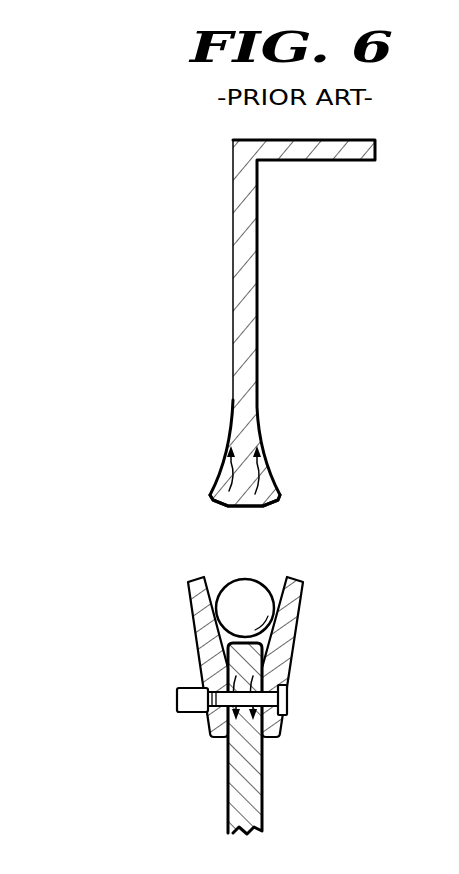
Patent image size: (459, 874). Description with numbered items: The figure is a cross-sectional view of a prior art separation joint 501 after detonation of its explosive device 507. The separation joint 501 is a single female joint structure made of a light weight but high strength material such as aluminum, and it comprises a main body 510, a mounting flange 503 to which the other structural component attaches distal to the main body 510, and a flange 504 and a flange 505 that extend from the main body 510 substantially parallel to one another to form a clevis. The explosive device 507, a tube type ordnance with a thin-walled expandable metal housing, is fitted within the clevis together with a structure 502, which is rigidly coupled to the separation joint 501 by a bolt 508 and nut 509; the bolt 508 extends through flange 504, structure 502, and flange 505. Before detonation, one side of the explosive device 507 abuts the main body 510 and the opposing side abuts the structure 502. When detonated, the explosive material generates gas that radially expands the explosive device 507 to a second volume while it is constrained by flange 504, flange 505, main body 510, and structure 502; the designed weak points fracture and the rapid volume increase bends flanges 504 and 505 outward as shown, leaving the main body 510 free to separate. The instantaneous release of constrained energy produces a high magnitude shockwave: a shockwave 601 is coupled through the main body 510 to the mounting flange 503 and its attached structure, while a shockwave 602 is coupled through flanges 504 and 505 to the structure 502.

The separation joint 501 is at (97, 132).
The structure 502 is at (251, 773).
The mounting flange 503 is at (325, 151).
The flange 504 is at (297, 617).
The flange 505 is at (200, 617).
The explosive device 507 is at (248, 584).
The bolt 508 is at (289, 698).
The nut 509 is at (177, 698).
The main body 510 is at (268, 480).
The shockwave 601 is at (226, 466).
The shockwave 602 is at (226, 676).